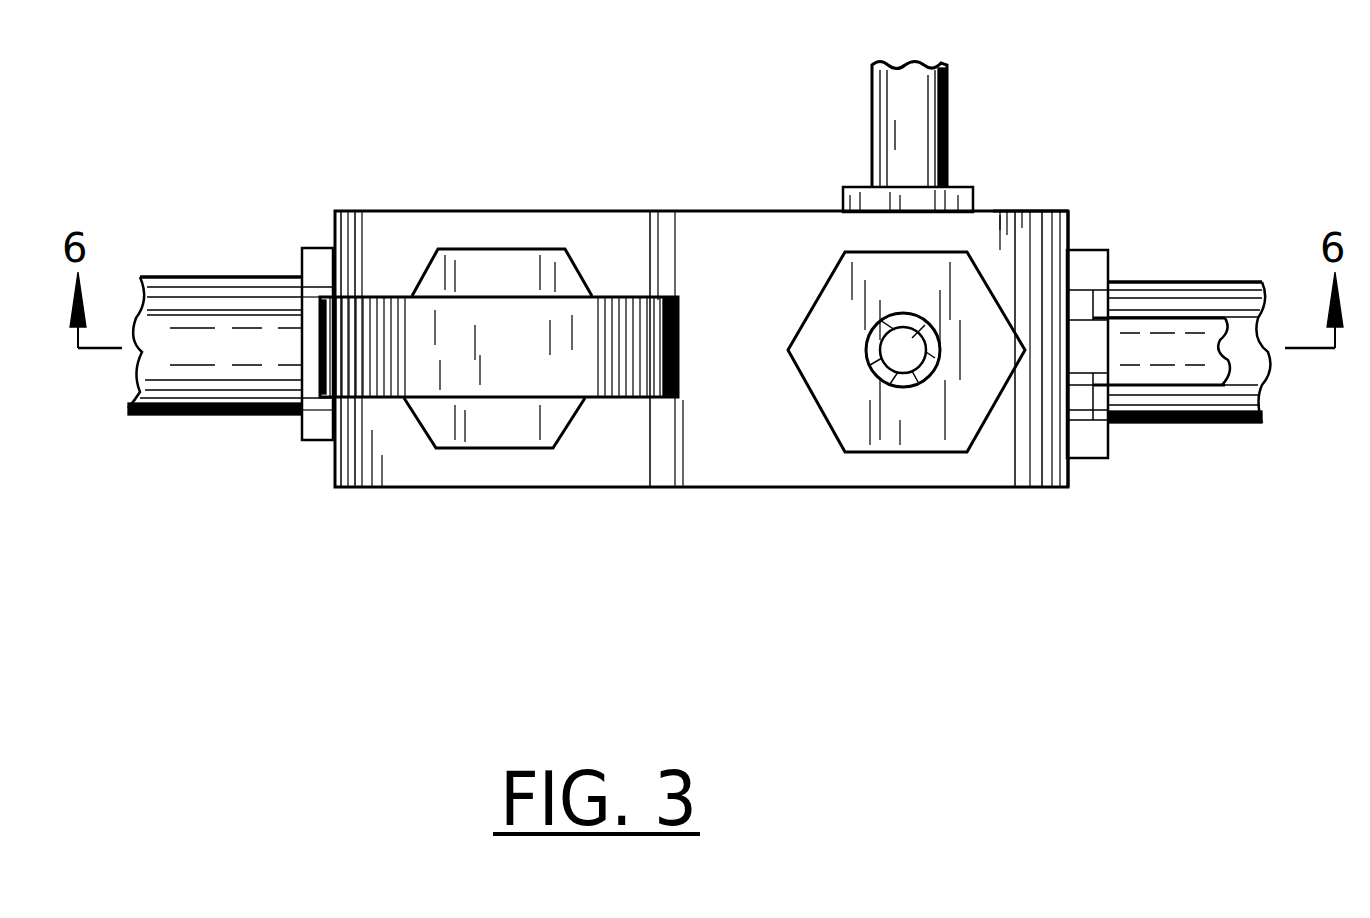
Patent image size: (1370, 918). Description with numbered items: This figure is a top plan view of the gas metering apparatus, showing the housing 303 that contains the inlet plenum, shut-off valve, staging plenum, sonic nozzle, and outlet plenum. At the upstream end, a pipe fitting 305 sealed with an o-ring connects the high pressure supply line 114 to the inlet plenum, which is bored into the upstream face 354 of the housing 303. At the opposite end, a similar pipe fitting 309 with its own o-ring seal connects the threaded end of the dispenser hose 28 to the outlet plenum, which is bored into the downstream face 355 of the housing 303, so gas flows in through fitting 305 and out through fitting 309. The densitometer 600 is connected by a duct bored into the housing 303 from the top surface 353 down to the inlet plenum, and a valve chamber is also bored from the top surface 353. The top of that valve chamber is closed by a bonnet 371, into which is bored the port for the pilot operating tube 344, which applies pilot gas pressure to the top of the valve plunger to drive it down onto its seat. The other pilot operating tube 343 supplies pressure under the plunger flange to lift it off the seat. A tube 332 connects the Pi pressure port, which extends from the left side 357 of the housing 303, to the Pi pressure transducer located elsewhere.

The housing 303 is at (373, 208).
The top surface 353 is at (763, 264).
The upstream face 354 is at (333, 465).
The high pressure supply line 114 is at (270, 277).
The pipe fitting 305 is at (302, 435).
The densitometer 600 is at (605, 403).
The bonnet 371 is at (828, 420).
The pilot operating tube 344 is at (875, 333).
The tube 332 is at (947, 93).
The left side 357 is at (1047, 212).
The downstream face 355 is at (1113, 160).
The pipe fitting 309 is at (1095, 458).
The dispenser hose 28 is at (1183, 427).
The pilot operating tube 343 is at (1153, 317).